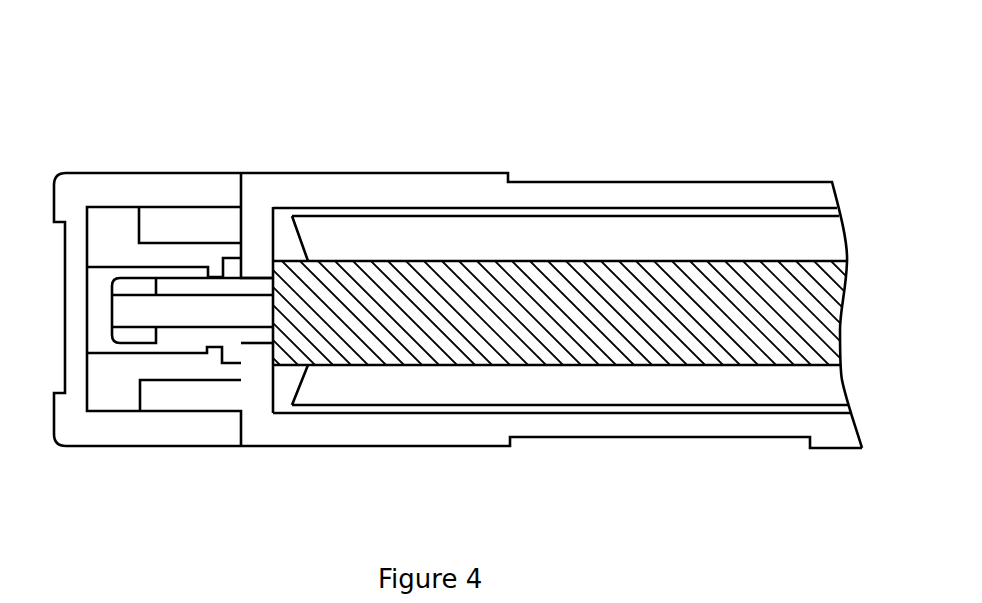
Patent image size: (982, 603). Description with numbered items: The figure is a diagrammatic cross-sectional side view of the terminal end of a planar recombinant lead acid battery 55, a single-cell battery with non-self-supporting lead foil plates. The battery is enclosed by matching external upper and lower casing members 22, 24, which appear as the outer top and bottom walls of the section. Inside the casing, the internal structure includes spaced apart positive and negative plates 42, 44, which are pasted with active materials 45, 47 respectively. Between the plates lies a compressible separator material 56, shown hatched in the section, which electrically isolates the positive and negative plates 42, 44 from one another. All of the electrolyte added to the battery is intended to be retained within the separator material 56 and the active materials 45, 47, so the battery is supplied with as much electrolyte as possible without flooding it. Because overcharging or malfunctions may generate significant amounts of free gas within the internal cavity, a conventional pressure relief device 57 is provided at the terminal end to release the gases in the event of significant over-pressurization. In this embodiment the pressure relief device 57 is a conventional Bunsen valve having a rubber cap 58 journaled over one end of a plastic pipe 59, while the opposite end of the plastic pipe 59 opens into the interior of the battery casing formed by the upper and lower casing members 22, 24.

The upper casing member 22 is at (753, 196).
The lower casing member 24 is at (733, 423).
The positive plate 42 is at (302, 210).
The negative plate 44 is at (550, 408).
The active material 45 is at (360, 233).
The active material 47 is at (628, 388).
The planar recombinant lead acid battery 55 is at (595, 110).
The separator material 56 is at (657, 278).
The pressure relief device 57 is at (205, 245).
The rubber cap 58 is at (98, 335).
The plastic pipe 59 is at (218, 337).